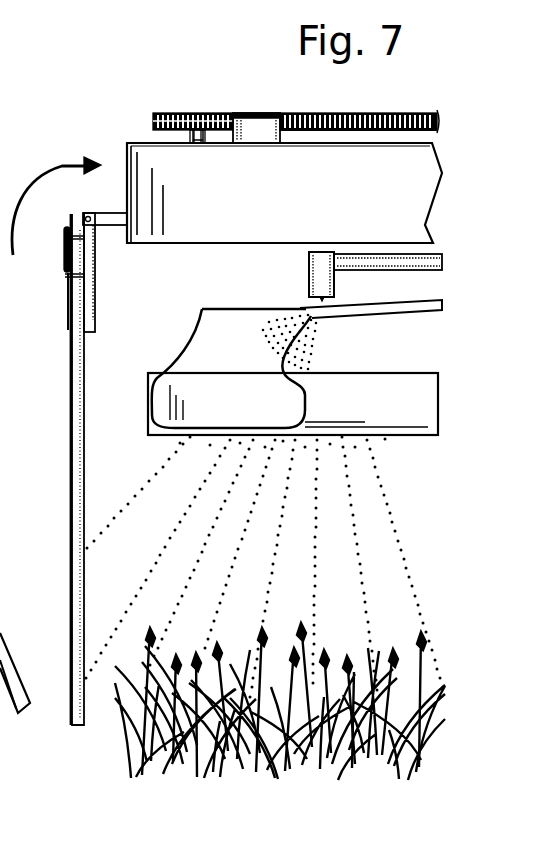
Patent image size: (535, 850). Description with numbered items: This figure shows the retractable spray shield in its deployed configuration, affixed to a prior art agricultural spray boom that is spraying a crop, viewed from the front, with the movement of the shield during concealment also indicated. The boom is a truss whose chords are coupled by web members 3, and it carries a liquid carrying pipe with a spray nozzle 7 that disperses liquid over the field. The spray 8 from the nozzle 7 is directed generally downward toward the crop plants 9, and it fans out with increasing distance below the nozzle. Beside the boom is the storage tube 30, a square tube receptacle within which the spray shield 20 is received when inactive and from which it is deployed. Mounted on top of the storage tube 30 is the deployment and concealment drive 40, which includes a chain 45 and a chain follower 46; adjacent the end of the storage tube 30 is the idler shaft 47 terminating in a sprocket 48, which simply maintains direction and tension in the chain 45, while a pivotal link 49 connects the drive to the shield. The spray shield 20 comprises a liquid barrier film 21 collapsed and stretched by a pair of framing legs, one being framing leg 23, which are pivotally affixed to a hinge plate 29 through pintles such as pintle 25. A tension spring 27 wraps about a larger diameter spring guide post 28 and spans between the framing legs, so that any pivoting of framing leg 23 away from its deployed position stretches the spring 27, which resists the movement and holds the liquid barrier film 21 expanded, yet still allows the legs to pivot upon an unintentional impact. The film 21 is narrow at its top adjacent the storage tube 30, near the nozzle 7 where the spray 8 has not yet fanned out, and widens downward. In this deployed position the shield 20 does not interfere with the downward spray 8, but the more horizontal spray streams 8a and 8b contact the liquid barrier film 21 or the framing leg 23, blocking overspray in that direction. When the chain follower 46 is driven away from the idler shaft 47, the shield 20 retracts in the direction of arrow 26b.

The web members 3 is at (242, 393).
The spray nozzle 7 is at (320, 266).
The spray 8 is at (385, 502).
The spray stream 8a is at (107, 525).
The spray stream 8b is at (212, 470).
The crop plants 9 is at (160, 731).
The spray shield 20 is at (91, 577).
The liquid barrier film 21 is at (15, 602).
The framing leg 23 is at (83, 472).
The pintle 25 is at (66, 280).
The arrow 26b is at (63, 162).
The tension spring 27 is at (62, 255).
The spring guide post 28 is at (80, 232).
The hinge plate 29 is at (93, 318).
The storage tube 30 is at (250, 214).
The deployment and concealment drive 40 is at (233, 99).
The chain 45 is at (386, 113).
The chain follower 46 is at (273, 113).
The idler shaft 47 is at (193, 137).
The sprocket 48 is at (157, 113).
The pivotal link 49 is at (112, 220).